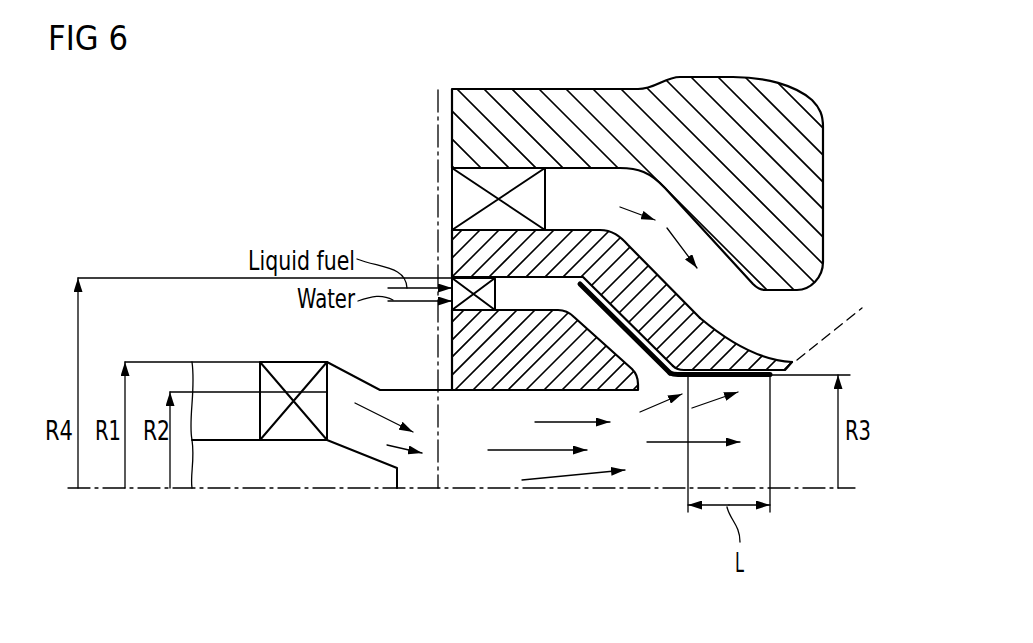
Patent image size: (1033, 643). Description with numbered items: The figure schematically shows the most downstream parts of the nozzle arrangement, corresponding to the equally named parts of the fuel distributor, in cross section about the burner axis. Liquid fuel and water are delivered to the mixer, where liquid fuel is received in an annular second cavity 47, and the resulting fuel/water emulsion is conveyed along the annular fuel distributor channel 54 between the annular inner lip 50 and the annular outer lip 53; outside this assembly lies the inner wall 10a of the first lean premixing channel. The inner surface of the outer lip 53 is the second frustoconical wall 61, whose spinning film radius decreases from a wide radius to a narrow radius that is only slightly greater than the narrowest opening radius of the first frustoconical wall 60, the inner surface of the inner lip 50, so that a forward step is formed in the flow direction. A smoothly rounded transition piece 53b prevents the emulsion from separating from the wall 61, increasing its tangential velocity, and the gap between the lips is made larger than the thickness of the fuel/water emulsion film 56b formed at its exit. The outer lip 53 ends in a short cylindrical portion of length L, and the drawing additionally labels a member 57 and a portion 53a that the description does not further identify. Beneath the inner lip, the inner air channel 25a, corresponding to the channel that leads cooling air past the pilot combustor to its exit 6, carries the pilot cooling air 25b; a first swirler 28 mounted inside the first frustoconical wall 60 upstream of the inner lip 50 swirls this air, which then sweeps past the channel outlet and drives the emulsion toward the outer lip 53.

The inner wall of the first lean premixing channel 10a is at (610, 95).
The annular outer lip 53 is at (740, 297).
The annular fuel distributor channel 54 is at (528, 293).
The fuel lance body 57 is at (572, 190).
The transition piece 53b is at (695, 352).
The lip tip surface 53a is at (760, 355).
The second frustoconical wall 61 is at (628, 311).
The fuel/water emulsion film 56b is at (753, 380).
The annular second cavity 47 is at (470, 275).
The annular inner lip 50 is at (457, 330).
The first frustoconical wall 60 is at (499, 388).
The inner air channel 25a is at (228, 427).
The first swirler 28 is at (292, 428).
The exit of the pilot combustor 6 is at (318, 512).
The pilot cooling air 25b is at (508, 450).